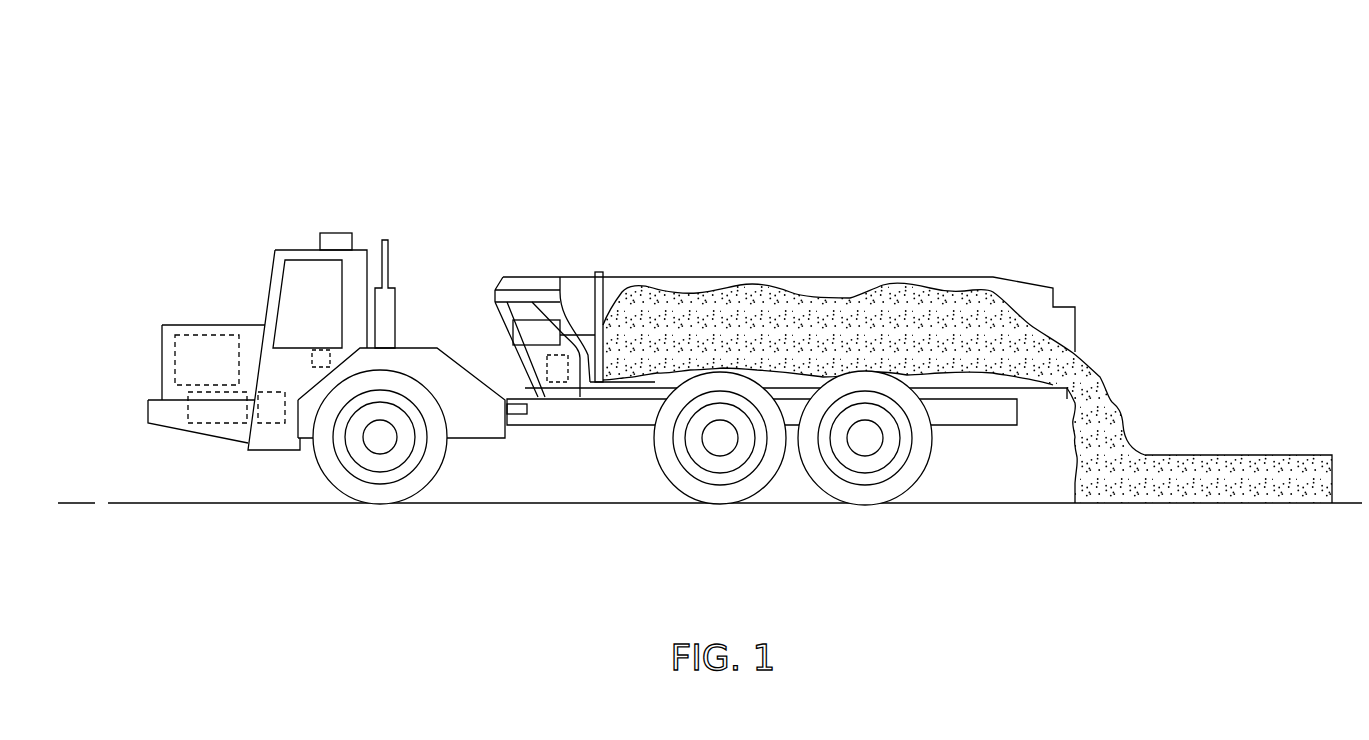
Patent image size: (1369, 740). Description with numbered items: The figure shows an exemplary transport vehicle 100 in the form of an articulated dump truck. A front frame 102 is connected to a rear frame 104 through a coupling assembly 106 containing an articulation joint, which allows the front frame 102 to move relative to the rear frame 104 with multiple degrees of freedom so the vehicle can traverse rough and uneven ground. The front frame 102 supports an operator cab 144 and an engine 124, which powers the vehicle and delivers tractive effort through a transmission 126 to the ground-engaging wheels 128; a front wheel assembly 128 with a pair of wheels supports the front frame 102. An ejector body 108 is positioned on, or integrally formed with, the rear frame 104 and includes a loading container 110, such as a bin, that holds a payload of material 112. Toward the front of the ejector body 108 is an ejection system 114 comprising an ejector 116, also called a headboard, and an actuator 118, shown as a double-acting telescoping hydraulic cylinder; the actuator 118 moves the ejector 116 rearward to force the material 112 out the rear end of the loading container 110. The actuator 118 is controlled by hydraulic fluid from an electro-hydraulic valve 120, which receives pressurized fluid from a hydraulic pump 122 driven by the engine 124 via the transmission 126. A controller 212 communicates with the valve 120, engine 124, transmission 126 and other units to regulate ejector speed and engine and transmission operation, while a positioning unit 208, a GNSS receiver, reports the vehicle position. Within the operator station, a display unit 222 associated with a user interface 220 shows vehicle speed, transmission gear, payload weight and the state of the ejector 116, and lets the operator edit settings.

The transport vehicle 100 is at (710, 313).
The front frame 102 is at (291, 346).
The rear frame 104 is at (875, 348).
The coupling assembly 106 is at (532, 453).
The ejector body 108 is at (967, 335).
The loading container 110 is at (746, 263).
The material 112 is at (745, 327).
The ejection system 114 is at (579, 253).
The ejector 116 is at (605, 326).
The actuator 118 is at (532, 325).
The electro-hydraulic valve 120 is at (547, 367).
The hydraulic pump 122 is at (272, 425).
The engine 124 is at (175, 353).
The transmission 126 is at (218, 425).
The ground-engaging wheels 128 is at (355, 485).
The operator cab 144 is at (322, 286).
The positioning unit 208 is at (335, 233).
The controller 212 is at (313, 348).
The user interface 220 is at (241, 285).
The display unit 222 is at (287, 320).